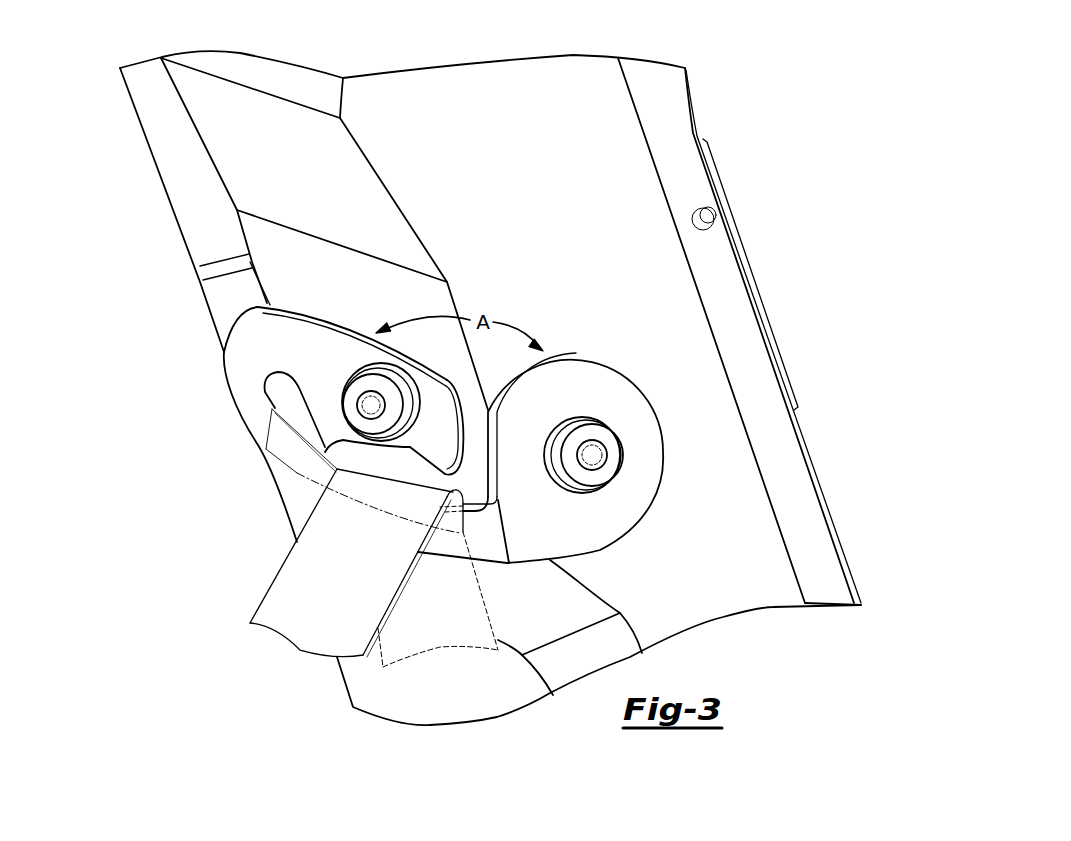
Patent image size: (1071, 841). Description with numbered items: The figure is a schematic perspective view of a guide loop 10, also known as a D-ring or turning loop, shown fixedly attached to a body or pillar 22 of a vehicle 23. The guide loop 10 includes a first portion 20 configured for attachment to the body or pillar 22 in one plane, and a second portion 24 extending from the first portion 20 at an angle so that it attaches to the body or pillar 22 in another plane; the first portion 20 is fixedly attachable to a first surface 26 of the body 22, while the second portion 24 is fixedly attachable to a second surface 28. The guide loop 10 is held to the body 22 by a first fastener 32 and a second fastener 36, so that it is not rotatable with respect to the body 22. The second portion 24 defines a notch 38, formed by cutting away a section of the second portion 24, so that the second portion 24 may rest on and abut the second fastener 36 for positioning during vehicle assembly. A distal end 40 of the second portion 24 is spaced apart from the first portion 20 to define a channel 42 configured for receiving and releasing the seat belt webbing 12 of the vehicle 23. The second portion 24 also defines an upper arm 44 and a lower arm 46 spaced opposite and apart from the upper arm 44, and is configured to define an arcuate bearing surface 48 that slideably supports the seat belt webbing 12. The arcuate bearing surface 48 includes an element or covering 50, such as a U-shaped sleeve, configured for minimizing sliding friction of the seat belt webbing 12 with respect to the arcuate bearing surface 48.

The guide loop 10 is at (567, 316).
The seat belt webbing 12 is at (329, 587).
The first portion 20 is at (628, 388).
The body or pillar 22 is at (519, 201).
The vehicle 23 is at (756, 193).
The second portion 24 is at (253, 452).
The first surface 26 is at (750, 515).
The second surface 28 is at (255, 112).
The first fastener 32 is at (620, 453).
The second fastener 36 is at (352, 392).
The notch 38 is at (410, 452).
The distal end 40 is at (449, 395).
The channel 42 is at (462, 420).
The upper arm 44 is at (303, 330).
The lower arm 46 is at (458, 547).
The arcuate bearing surface 48 is at (266, 401).
The element or covering 50 is at (290, 467).